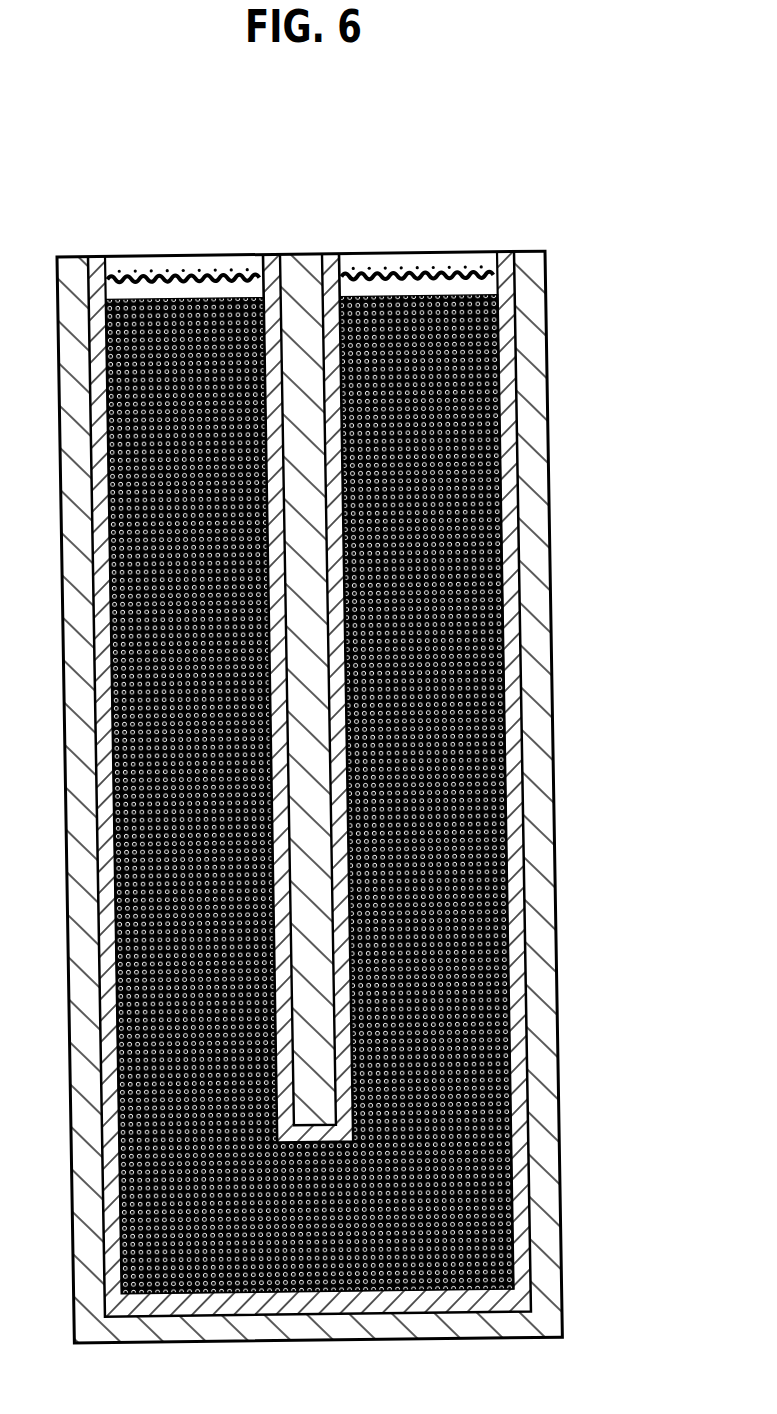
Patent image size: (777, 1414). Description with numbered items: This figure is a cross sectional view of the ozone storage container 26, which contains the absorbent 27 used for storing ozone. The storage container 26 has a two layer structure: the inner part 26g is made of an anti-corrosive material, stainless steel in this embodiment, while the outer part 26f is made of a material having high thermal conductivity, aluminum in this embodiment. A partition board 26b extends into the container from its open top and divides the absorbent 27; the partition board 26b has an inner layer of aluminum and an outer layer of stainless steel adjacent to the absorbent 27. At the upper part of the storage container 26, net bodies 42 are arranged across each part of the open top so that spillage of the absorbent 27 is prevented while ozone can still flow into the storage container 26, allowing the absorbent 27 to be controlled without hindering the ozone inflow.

The storage container 26 is at (578, 293).
The partition board 26b is at (312, 250).
The outer part 26f is at (532, 581).
The inner part 26g is at (510, 695).
The absorbent 27 is at (553, 407).
The net bodies 42 is at (163, 277).